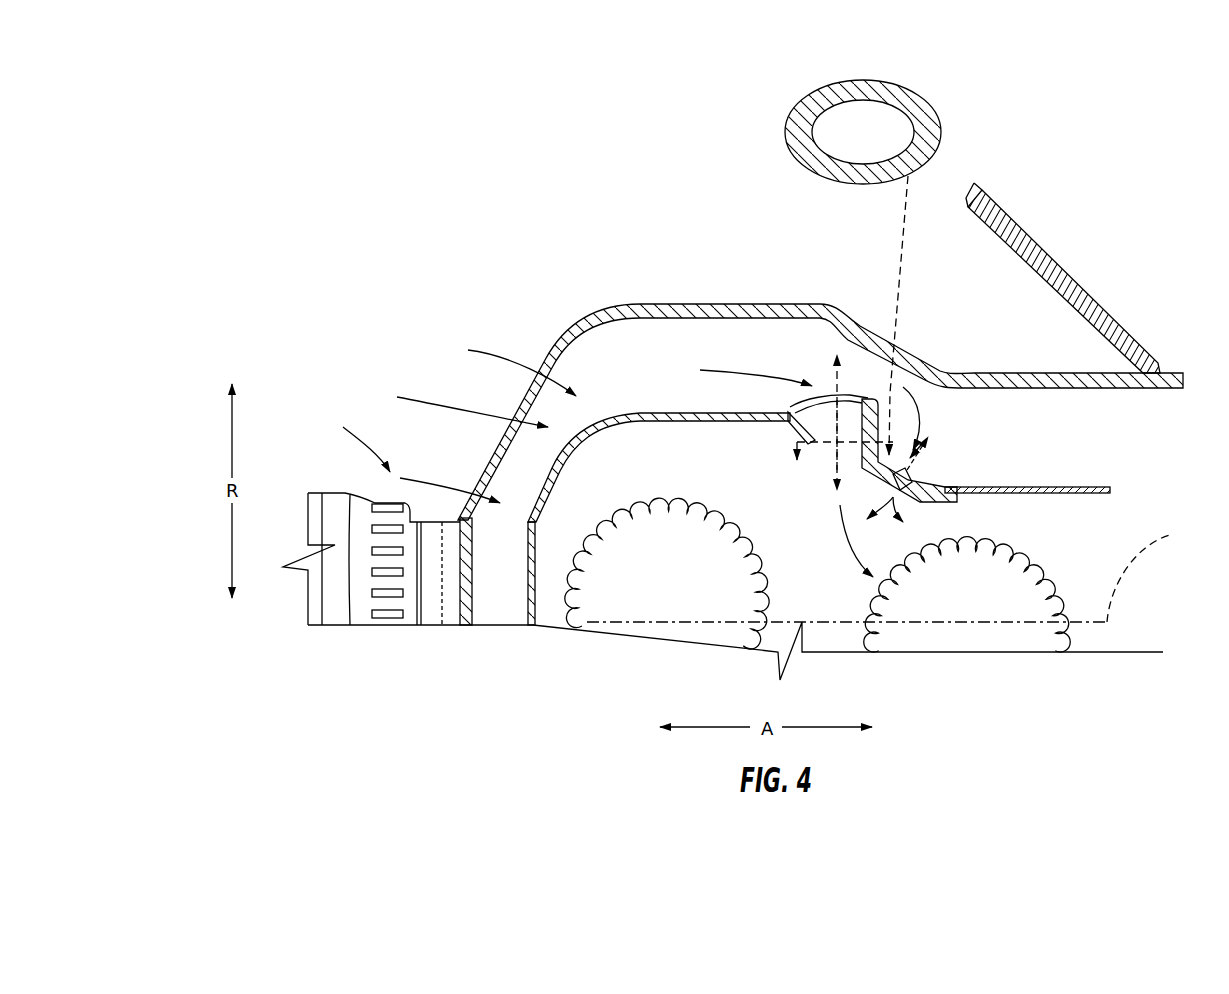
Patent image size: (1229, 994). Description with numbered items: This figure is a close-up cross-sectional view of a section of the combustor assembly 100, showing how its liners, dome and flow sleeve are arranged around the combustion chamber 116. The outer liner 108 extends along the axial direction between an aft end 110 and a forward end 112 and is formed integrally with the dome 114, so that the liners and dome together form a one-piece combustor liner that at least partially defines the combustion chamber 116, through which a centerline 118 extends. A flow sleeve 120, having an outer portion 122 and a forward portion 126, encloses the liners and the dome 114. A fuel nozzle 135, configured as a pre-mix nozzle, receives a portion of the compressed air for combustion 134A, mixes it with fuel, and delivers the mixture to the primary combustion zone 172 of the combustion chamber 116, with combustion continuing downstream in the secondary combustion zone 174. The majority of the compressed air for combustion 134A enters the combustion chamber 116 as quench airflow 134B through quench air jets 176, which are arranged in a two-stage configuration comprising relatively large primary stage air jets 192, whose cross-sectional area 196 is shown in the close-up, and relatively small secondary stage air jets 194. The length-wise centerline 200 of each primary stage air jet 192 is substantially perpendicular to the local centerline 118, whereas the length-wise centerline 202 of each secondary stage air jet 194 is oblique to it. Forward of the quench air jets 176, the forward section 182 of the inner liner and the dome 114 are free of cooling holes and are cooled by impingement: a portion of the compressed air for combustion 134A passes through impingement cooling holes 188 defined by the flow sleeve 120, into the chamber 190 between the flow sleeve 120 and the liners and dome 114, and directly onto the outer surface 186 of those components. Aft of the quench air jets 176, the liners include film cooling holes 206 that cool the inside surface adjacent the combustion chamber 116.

The combustor assembly 100 is at (533, 208).
The outer liner 108 is at (988, 486).
The aft end of outer liner 110 is at (1102, 482).
The forward end of outer liner 112 is at (529, 500).
The dome 114 is at (537, 577).
The combustion chamber 116 is at (822, 535).
The centerline 118 is at (1154, 575).
The flow sleeve 120 is at (820, 369).
The outer portion of flow sleeve 122 is at (760, 302).
The forward portion of flow sleeve 126 is at (464, 614).
The compressed air for combustion 134A is at (511, 356).
The quench airflow 134B is at (705, 370).
The fuel nozzle 135 is at (435, 607).
The primary combustion zone 172 is at (687, 585).
The secondary combustion zone 174 is at (982, 595).
The quench air jets 176 is at (900, 375).
The forward section of inner liner 182 is at (654, 408).
The outer surface 186 is at (615, 413).
The impingement cooling holes 188 is at (532, 362).
The chamber 190 is at (614, 369).
The primary stage air jets 192 is at (921, 122).
The secondary stage air jets 194 is at (918, 468).
The cross-sectional area 196 is at (879, 146).
The length-wise centerline of primary air jet 200 is at (830, 457).
The length-wise centerline of secondary stage air jet 202 is at (893, 497).
The film cooling holes 206 is at (963, 499).